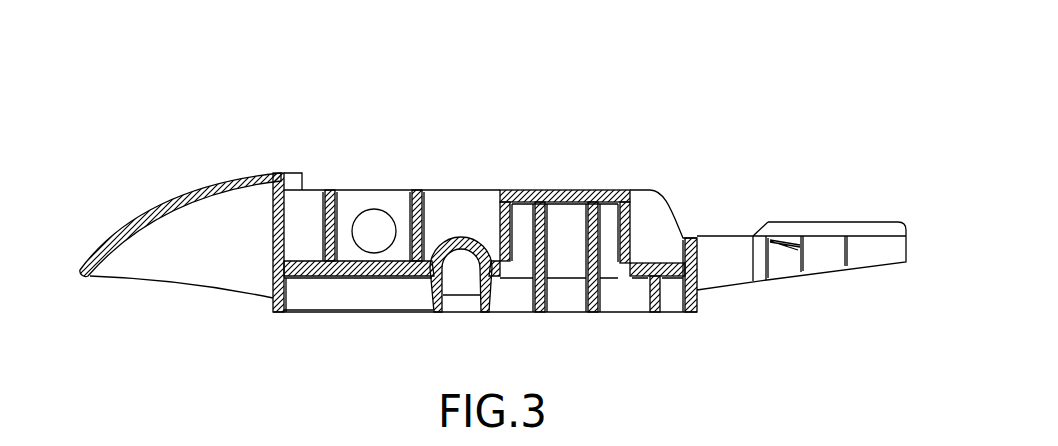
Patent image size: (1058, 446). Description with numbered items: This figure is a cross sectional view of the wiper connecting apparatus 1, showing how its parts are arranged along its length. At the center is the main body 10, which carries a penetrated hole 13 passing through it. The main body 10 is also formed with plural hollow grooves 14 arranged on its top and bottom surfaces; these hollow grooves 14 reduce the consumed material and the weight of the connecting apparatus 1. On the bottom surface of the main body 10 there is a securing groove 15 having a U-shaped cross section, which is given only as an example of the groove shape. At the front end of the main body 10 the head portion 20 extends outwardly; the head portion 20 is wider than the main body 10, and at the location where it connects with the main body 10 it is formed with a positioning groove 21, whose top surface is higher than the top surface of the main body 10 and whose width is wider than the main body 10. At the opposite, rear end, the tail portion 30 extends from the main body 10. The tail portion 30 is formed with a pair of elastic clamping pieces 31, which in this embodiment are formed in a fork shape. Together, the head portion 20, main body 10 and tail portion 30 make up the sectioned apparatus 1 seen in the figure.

The wiper connecting apparatus 1 is at (497, 56).
The main body 10 is at (570, 190).
The penetrated hole 13 is at (374, 222).
The hollow grooves 14 is at (455, 208).
The securing groove 15 is at (462, 280).
The head portion 20 is at (192, 187).
The positioning groove 21 is at (293, 173).
The tail portion 30 is at (728, 245).
The elastic clamping pieces 31 is at (836, 228).